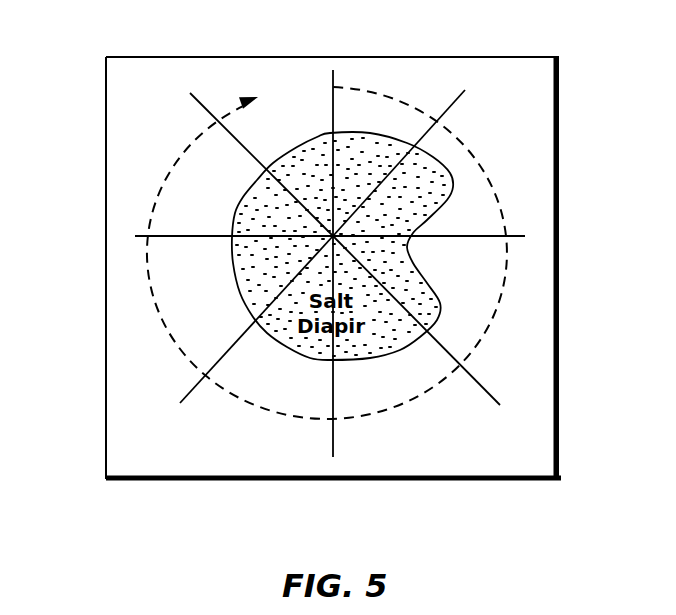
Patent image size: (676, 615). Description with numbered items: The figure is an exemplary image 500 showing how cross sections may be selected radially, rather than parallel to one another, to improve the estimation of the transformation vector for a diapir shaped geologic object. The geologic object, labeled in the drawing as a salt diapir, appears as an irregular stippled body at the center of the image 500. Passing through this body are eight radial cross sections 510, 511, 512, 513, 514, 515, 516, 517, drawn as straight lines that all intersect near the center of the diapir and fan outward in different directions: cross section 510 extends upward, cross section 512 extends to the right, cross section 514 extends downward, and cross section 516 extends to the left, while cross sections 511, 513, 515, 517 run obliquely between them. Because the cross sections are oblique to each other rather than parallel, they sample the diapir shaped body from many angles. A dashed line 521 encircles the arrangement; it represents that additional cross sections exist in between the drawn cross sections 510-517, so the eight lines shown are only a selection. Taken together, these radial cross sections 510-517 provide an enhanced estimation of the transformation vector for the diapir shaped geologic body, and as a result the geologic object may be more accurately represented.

The image 500 is at (163, 57).
The radial cross section 510 is at (331, 106).
The radial cross section 511 is at (445, 105).
The radial cross section 512 is at (518, 236).
The radial cross section 513 is at (490, 385).
The radial cross section 514 is at (332, 440).
The radial cross section 515 is at (190, 388).
The radial cross section 516 is at (143, 235).
The radial cross section 517 is at (198, 104).
The dashed line 521 is at (490, 172).